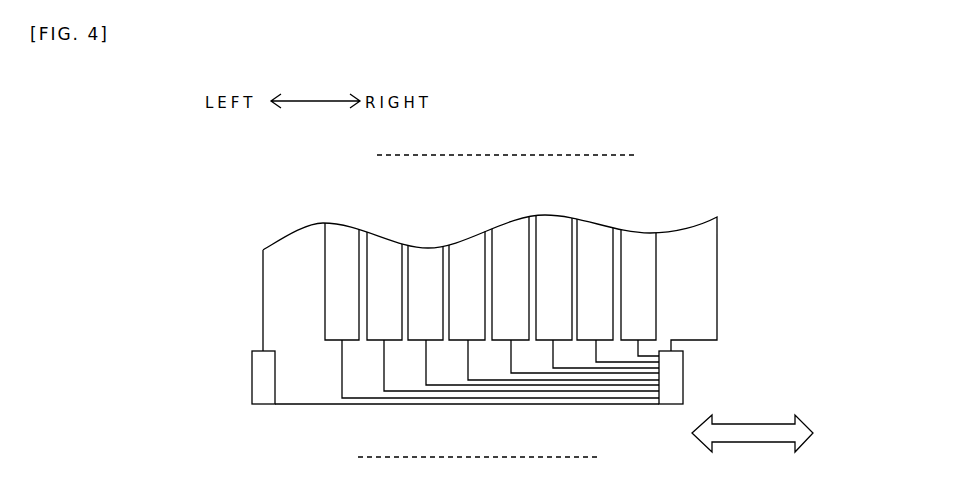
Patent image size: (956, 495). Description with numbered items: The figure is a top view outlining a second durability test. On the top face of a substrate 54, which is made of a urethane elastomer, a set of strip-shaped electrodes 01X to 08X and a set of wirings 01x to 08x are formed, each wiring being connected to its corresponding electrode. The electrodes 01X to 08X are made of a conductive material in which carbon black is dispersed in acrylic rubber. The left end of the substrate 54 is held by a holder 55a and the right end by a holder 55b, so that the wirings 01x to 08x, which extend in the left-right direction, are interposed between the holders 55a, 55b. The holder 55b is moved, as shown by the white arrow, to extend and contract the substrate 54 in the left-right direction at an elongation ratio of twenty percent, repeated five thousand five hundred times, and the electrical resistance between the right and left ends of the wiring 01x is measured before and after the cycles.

The substrate 54 is at (295, 263).
The electrode 01X is at (342, 245).
The electrode 08X is at (637, 250).
The wiring 01x is at (342, 382).
The wiring 08x is at (647, 352).
The holder 55a is at (260, 380).
The holder 55b is at (677, 387).